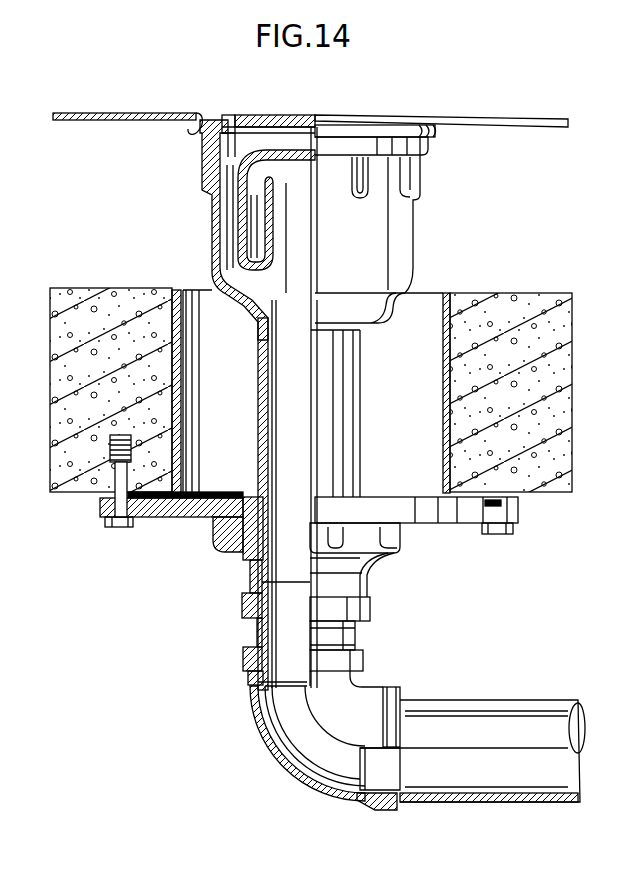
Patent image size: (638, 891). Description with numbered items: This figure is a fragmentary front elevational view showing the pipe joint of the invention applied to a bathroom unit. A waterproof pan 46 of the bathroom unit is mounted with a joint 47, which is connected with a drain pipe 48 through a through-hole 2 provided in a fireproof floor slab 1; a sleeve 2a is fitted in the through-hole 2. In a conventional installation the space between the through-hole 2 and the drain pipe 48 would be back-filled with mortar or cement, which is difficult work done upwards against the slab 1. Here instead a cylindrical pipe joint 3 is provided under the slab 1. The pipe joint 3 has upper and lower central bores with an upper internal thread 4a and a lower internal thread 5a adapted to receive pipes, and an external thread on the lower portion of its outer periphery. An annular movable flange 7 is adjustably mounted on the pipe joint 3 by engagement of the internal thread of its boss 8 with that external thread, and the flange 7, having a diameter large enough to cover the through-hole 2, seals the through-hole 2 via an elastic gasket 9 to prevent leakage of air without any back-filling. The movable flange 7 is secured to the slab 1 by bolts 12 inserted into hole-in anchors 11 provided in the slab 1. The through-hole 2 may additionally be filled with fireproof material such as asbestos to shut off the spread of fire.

The fireproof floor slab 1 is at (57, 493).
The through-hole 2 is at (212, 298).
The sleeve 2a is at (177, 290).
The pipe joint 3 is at (242, 610).
The upper internal thread 4a is at (258, 628).
The lower internal thread 5a is at (262, 487).
The movable flange 7 is at (150, 508).
The boss 8 is at (224, 538).
The elastic gasket 9 is at (165, 503).
The hole-in anchor 11 is at (110, 452).
The bolt 12 is at (108, 527).
The waterproof pan 46 is at (125, 113).
The joint 47 is at (216, 218).
The drain pipe 48 is at (466, 800).